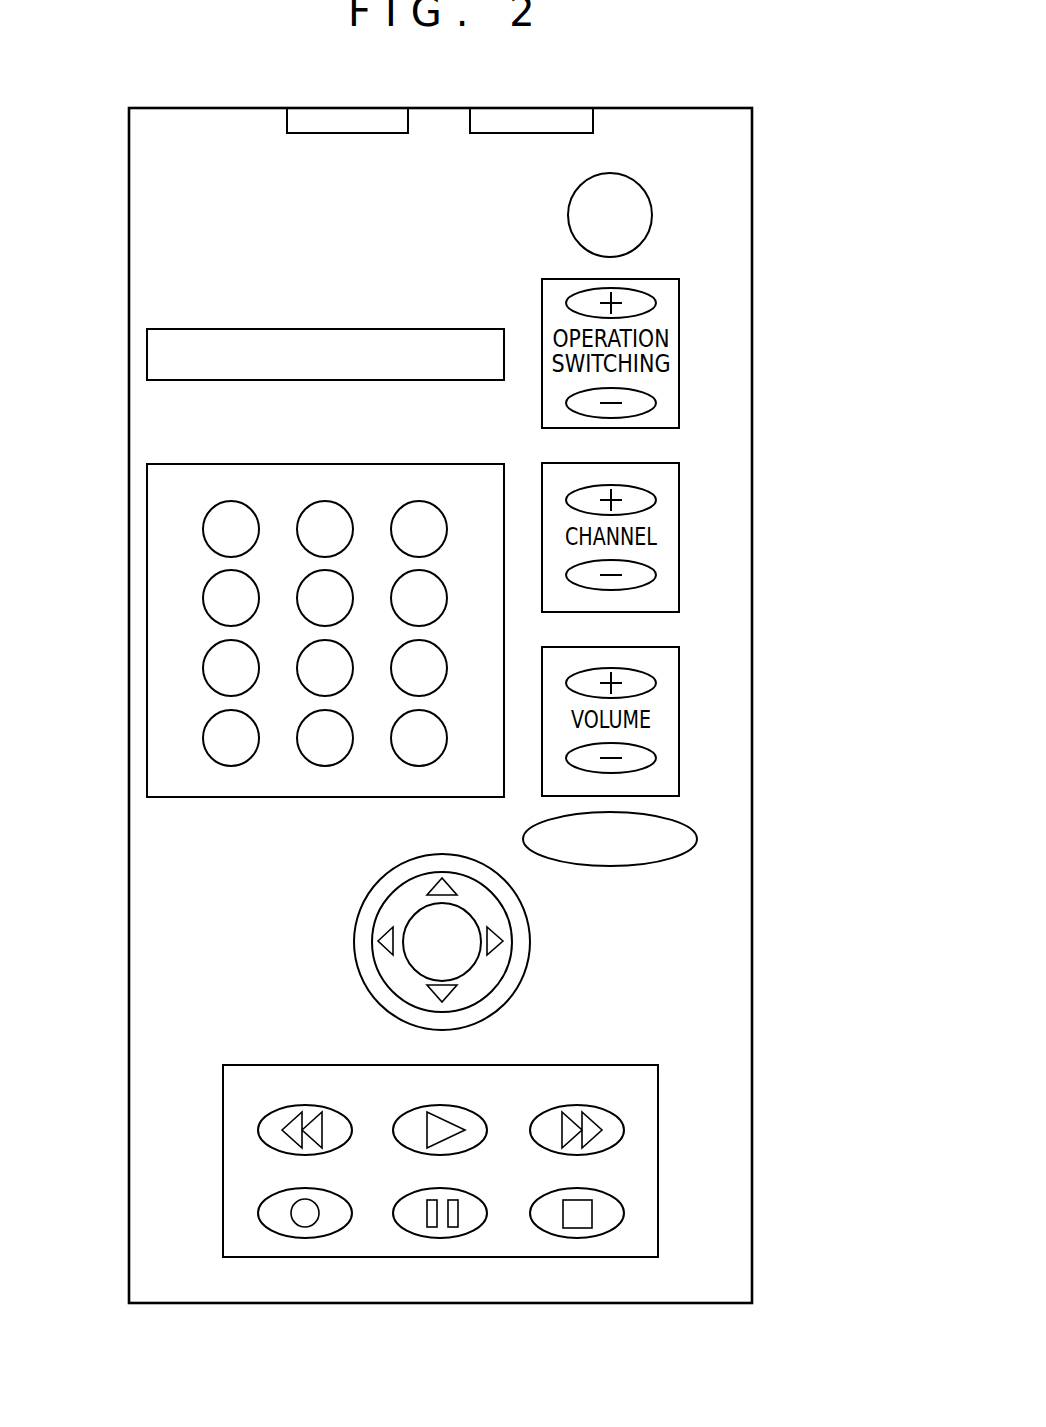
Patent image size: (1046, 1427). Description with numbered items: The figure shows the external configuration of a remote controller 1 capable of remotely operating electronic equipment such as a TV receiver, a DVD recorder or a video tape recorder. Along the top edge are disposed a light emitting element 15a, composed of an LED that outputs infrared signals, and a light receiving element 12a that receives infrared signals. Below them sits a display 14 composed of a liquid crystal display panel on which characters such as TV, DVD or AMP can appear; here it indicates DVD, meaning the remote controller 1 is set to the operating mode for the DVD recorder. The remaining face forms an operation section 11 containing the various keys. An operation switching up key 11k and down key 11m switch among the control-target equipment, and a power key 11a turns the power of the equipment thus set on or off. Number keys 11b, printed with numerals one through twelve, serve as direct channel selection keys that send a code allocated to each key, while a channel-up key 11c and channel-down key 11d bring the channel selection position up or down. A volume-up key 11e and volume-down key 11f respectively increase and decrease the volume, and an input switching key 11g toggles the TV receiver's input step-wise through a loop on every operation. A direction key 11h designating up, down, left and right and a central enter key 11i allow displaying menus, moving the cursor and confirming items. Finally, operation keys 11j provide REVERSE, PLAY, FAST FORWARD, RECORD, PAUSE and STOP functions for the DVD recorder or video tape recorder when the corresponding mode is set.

The remote controller 1 is at (645, 108).
The light receiving element 12a is at (350, 123).
The light emitting element 15a is at (533, 122).
The operation section 11 is at (735, 1255).
The power key 11a is at (637, 185).
The number keys 11b is at (300, 505).
The channel-up key 11c is at (656, 500).
The channel-down key 11d is at (656, 575).
The volume-up key 11e is at (656, 683).
The volume-down key 11f is at (656, 758).
The input switching key 11g is at (672, 858).
The direction key 11h is at (448, 880).
The enter key 11i is at (460, 965).
The operation keys 11j is at (400, 1142).
The operation switching up key 11k is at (656, 303).
The operation switching down key 11m is at (656, 403).
The display 14 is at (147, 357).